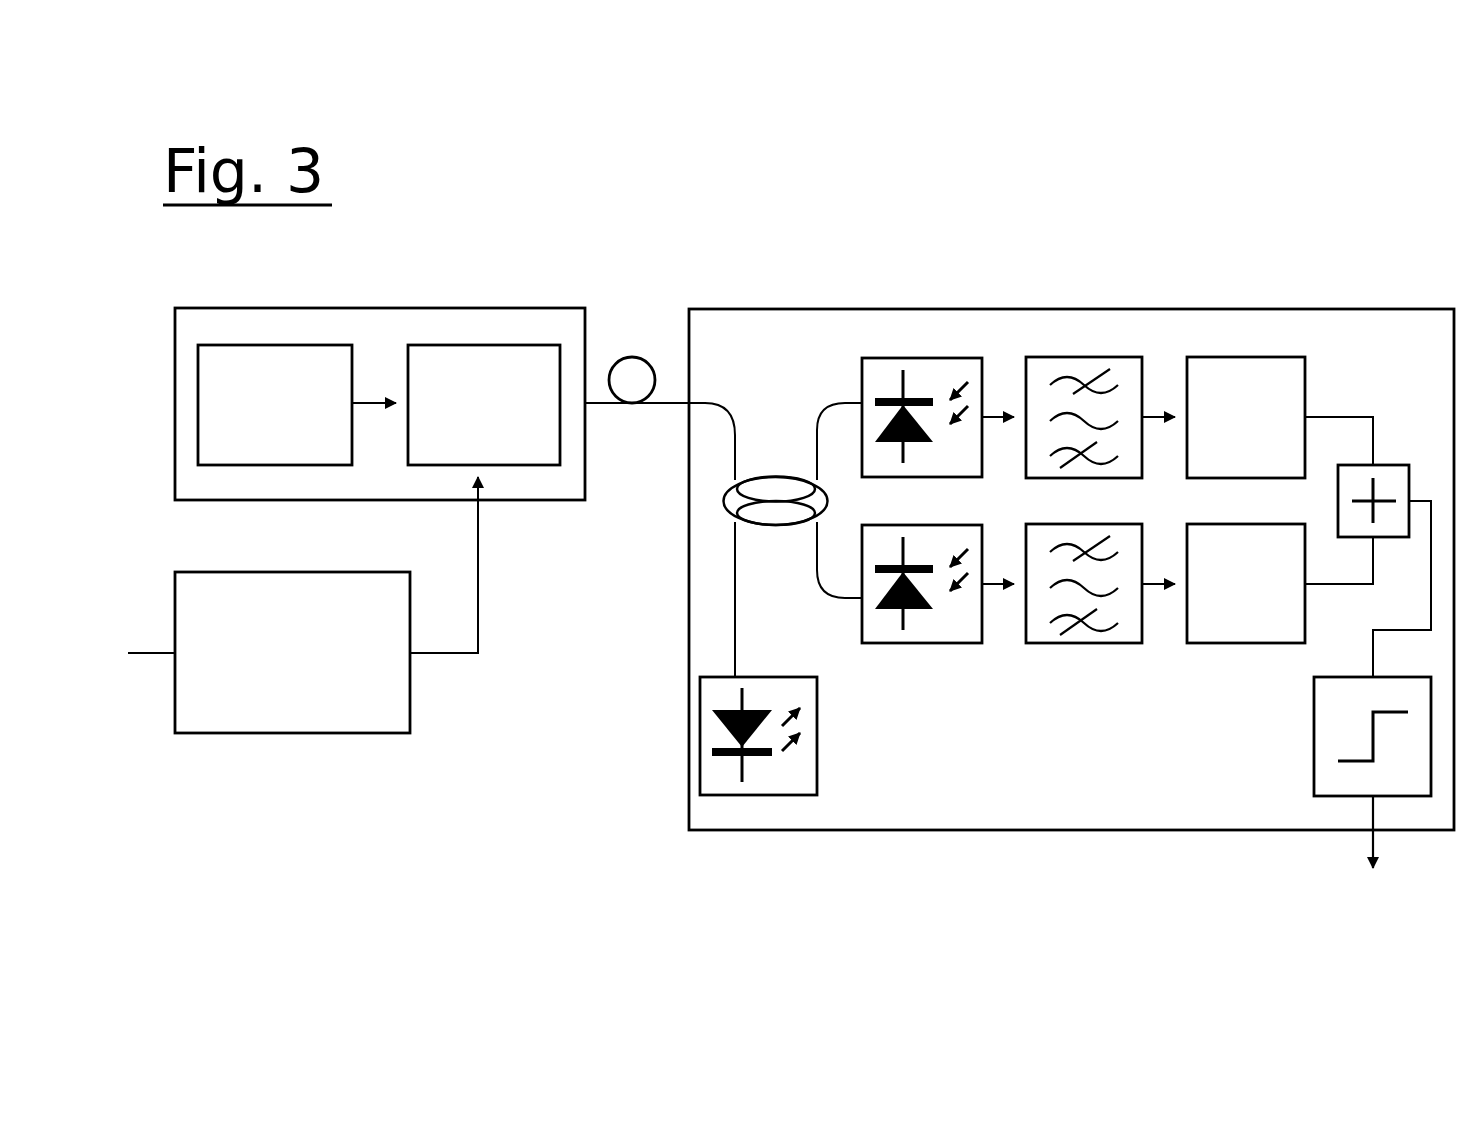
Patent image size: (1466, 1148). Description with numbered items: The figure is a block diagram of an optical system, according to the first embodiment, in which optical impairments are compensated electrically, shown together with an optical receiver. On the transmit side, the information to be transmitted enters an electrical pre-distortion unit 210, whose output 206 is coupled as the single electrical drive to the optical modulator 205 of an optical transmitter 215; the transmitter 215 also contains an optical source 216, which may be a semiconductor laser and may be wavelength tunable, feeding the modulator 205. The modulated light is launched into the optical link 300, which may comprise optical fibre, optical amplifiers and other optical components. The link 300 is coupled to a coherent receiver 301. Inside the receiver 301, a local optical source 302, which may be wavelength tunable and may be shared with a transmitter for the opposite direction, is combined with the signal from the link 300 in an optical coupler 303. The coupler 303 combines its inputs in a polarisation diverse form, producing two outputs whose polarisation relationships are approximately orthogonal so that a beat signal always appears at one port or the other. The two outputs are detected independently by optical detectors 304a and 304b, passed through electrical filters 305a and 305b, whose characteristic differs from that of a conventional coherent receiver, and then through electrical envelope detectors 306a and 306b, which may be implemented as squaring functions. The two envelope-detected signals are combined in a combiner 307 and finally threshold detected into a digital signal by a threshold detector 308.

The optical modulator 205 is at (478, 345).
The single output 206 is at (478, 595).
The pre-distortion unit 210 is at (410, 690).
The optical transmitter 215 is at (375, 308).
The optical source 216 is at (270, 345).
The optical link 300 is at (632, 357).
The coherent receiver 301 is at (688, 584).
The optical source 302 is at (817, 772).
The optical coupler 303 is at (760, 475).
The optical detector 304a is at (920, 358).
The optical detector 304b is at (945, 643).
The electrical filter 305a is at (1083, 357).
The electrical filter 305b is at (1097, 643).
The electrical envelope detector 306a is at (1235, 357).
The electrical envelope detector 306b is at (1259, 643).
The combiner 307 is at (1397, 465).
The threshold detector 308 is at (1338, 796).